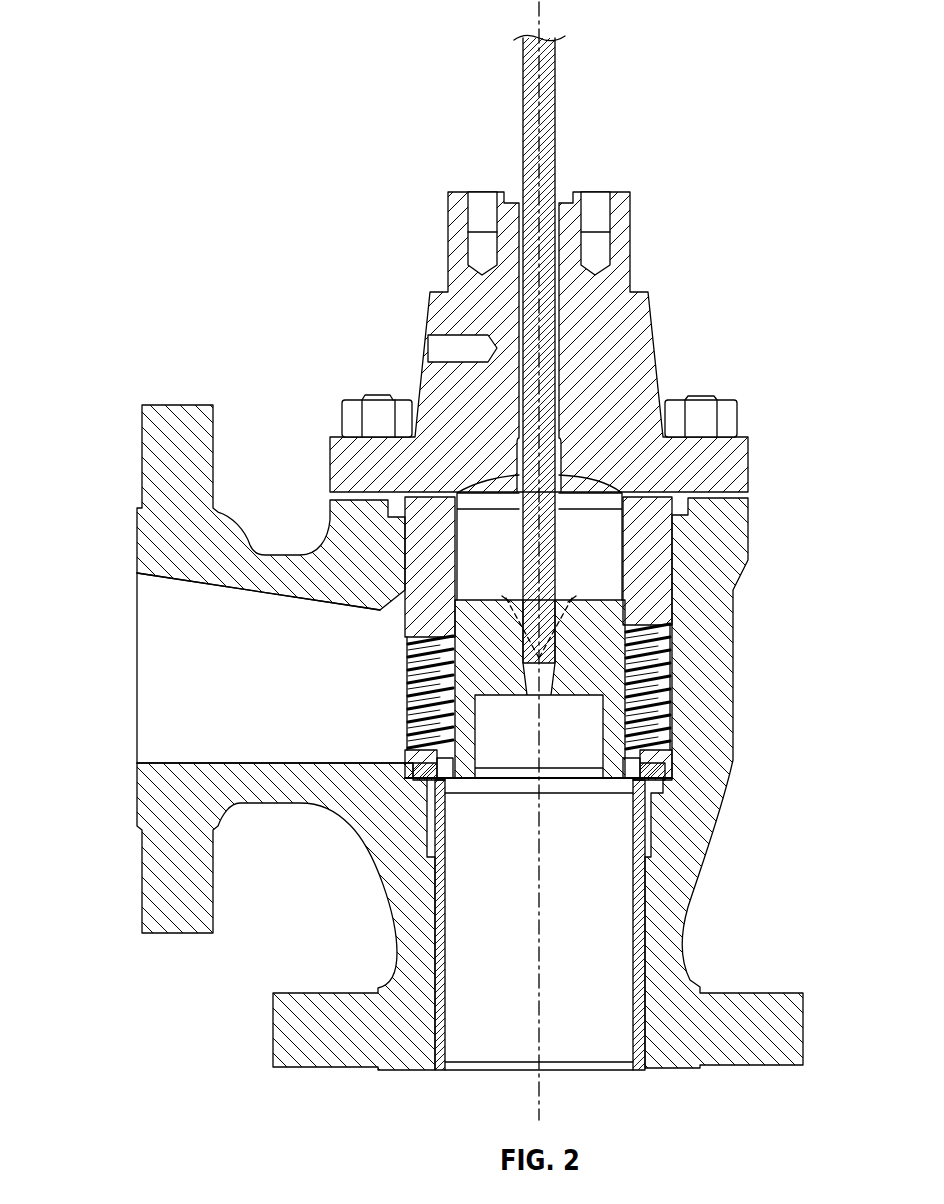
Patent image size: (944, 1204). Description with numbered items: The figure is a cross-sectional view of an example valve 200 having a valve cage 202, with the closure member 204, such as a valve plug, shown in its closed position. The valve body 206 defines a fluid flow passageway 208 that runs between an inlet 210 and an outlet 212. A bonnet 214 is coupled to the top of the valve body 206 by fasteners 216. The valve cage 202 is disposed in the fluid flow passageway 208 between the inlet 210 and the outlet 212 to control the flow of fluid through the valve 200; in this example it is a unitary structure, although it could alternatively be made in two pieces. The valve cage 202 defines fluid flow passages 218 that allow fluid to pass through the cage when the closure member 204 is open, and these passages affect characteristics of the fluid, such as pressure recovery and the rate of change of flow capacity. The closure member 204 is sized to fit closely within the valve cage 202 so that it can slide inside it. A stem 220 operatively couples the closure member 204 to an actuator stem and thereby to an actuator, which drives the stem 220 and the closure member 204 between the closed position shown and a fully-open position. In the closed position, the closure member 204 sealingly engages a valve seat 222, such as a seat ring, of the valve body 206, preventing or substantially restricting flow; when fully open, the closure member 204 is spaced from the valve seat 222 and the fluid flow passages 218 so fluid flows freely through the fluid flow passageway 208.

The valve 200 is at (667, 130).
The valve cage 202 is at (420, 552).
The closure member 204 is at (607, 660).
The valve body 206 is at (692, 905).
The fluid flow passageway 208 is at (126, 694).
The inlet 210 is at (136, 622).
The outlet 212 is at (511, 1068).
The bonnet 214 is at (428, 313).
The fasteners 216 is at (718, 398).
The fluid flow passages 218 is at (398, 714).
The stem 220 is at (521, 113).
The valve seat 222 is at (418, 789).